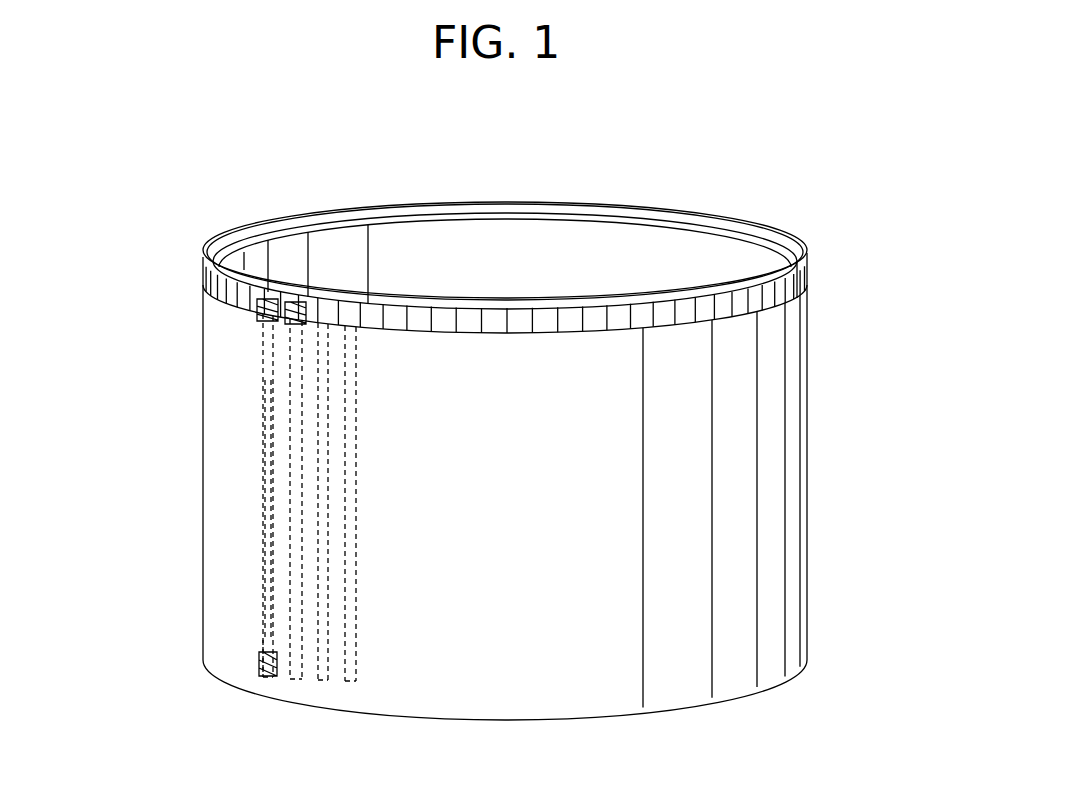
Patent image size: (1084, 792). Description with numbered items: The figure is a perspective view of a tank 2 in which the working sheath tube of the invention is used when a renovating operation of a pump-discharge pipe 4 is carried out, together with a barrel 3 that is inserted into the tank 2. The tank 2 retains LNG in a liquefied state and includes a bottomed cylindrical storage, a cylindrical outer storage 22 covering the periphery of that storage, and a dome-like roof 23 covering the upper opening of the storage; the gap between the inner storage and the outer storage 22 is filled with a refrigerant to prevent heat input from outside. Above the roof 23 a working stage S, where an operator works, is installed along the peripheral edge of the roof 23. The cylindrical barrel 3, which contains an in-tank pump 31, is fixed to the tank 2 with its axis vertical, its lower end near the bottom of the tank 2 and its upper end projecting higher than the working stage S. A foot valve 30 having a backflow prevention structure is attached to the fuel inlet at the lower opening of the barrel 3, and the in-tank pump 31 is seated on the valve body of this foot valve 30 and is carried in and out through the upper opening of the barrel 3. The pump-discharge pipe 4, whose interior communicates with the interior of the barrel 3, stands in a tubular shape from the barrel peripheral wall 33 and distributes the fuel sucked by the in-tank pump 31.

The tank 2 is at (702, 176).
The cylindrical outer storage 22 is at (808, 376).
The dome-like roof 23 is at (748, 253).
The working stage S is at (800, 297).
The barrel 3 is at (262, 532).
The foot valve 30 is at (262, 668).
The in-tank pump 31 is at (262, 648).
The barrel peripheral wall 33 is at (262, 577).
The pump-discharge pipe 4 is at (288, 323).